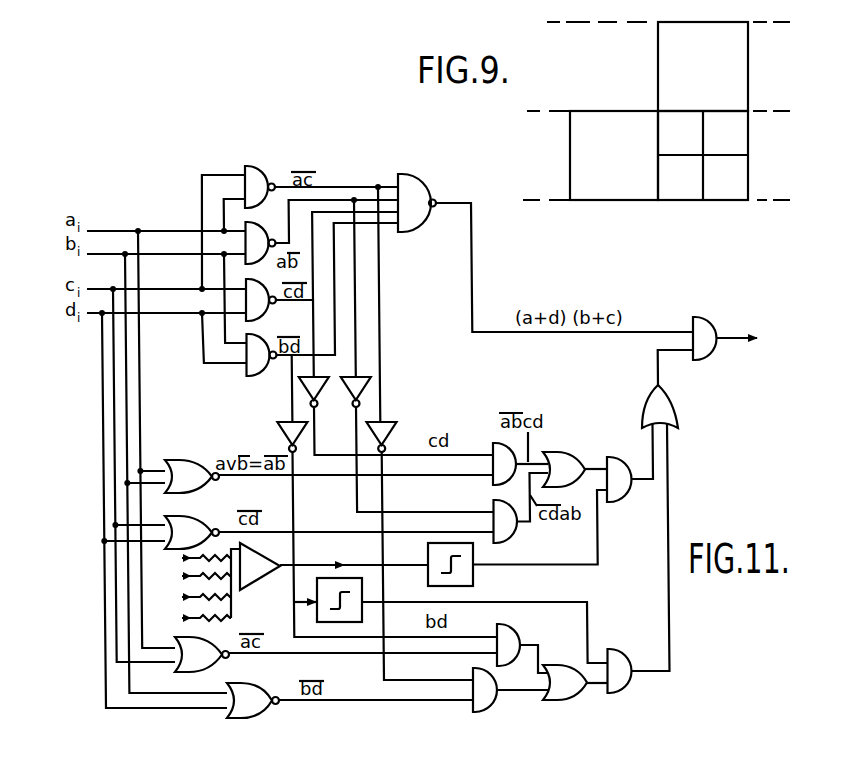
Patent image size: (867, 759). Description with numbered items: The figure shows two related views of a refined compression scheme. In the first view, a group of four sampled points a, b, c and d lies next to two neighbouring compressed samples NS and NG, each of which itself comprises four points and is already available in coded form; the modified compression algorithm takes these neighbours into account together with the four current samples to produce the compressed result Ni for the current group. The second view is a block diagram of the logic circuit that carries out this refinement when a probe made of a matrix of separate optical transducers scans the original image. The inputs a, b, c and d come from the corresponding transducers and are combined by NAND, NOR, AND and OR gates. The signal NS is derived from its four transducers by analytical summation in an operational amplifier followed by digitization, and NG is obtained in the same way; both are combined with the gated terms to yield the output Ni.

In FIG. 9, the compressed sample of current group Ni is at (748, 150).
In FIG. 11, the compressed sample of current group Ni is at (725, 333).
In FIG. 9, the compressed sample NS is at (703, 66).
In FIG. 11, the compressed sample NS is at (488, 564).
In FIG. 9, the compressed sample NG is at (614, 155).
In FIG. 11, the compressed sample NG is at (424, 600).